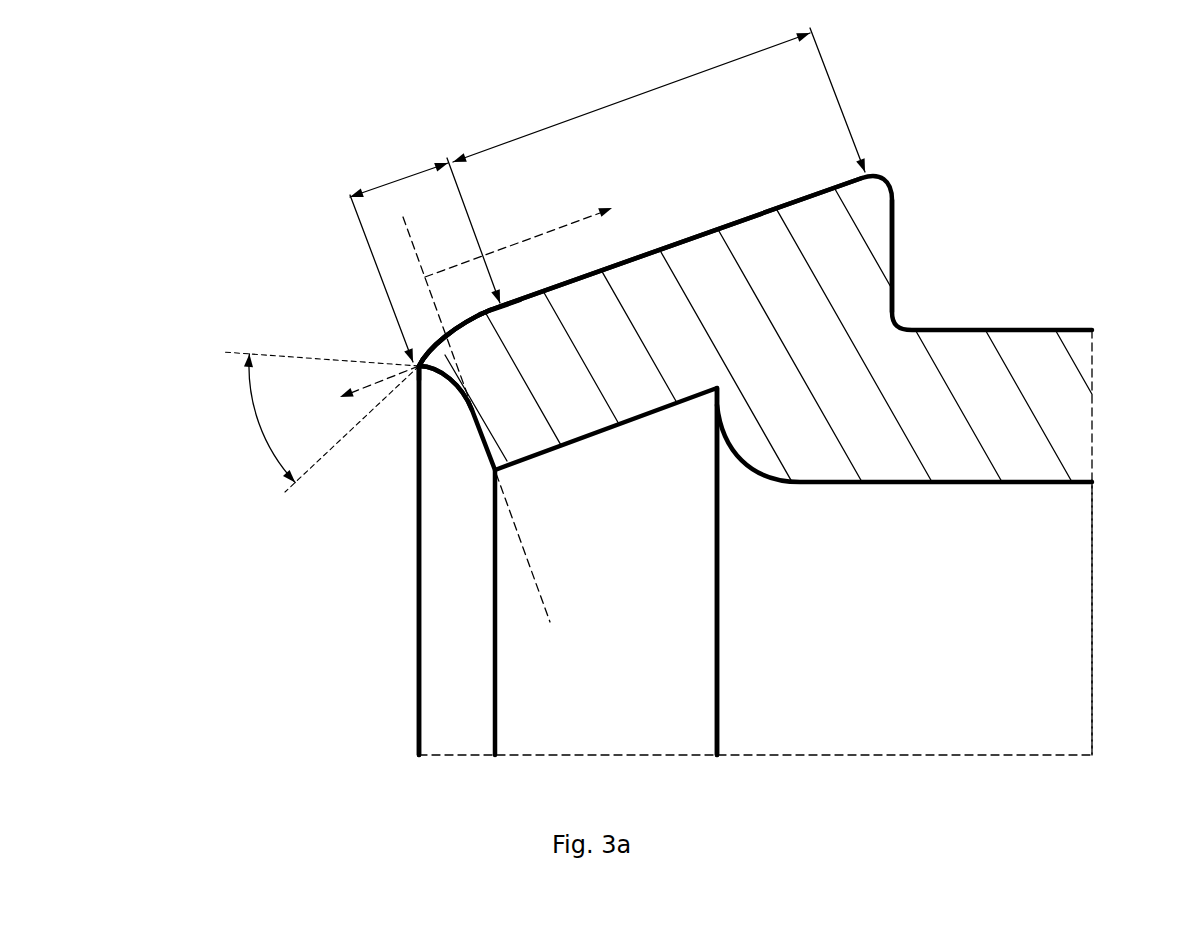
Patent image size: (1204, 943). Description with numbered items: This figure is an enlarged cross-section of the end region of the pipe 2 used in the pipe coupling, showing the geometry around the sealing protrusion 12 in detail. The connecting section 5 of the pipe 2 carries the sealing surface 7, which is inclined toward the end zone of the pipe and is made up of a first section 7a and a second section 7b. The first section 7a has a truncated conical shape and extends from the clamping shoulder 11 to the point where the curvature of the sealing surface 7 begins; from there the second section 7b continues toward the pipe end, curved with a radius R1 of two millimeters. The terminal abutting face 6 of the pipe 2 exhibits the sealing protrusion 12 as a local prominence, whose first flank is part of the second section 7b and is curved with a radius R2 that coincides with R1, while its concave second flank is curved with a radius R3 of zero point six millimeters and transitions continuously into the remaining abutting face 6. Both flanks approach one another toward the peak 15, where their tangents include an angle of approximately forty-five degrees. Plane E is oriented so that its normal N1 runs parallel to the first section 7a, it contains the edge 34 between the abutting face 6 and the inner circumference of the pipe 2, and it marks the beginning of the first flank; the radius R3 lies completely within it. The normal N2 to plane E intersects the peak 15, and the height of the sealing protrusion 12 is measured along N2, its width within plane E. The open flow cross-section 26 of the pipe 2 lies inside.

The pipe 2 is at (1063, 257).
The connecting section 5 is at (688, 652).
The abutting face 6 is at (458, 655).
The sealing surface 7 is at (724, 222).
The first section of the sealing surface 7a is at (659, 100).
The second section of the sealing surface 7b is at (425, 251).
The clamping shoulder 11 is at (893, 293).
The sealing protrusion 12 is at (387, 325).
The peak 15 is at (419, 366).
The open flow cross-section 26 is at (958, 597).
The edge 34 is at (495, 470).
The radius of the second section R1 is at (470, 330).
The radius of the first flank R2 is at (427, 348).
The radius of the second flank R3 is at (433, 377).
The normal of plane E N1 is at (539, 232).
The normal N2 is at (357, 389).
The plane E is at (483, 440).